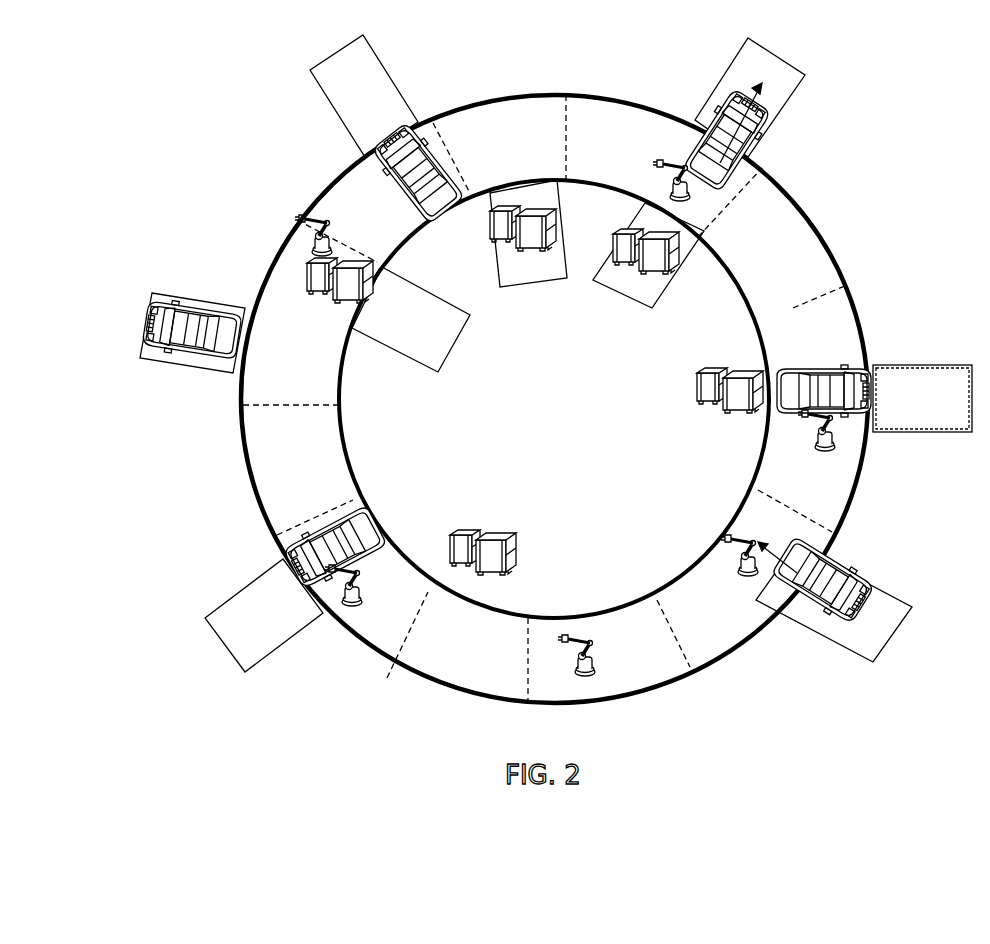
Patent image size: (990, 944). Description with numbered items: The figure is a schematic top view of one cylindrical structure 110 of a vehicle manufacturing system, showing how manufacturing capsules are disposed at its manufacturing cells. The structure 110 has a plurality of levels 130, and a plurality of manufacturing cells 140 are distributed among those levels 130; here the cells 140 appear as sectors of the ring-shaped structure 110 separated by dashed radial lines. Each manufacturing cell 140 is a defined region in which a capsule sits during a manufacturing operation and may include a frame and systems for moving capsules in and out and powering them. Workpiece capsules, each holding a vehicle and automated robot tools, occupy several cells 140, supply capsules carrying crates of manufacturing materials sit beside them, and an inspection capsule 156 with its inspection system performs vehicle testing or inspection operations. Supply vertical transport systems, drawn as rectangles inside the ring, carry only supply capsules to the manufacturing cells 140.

The structure 110 is at (146, 138).
The level 130 is at (398, 663).
The manufacturing cell 140 is at (284, 502).
The inspection capsule 156 is at (583, 617).